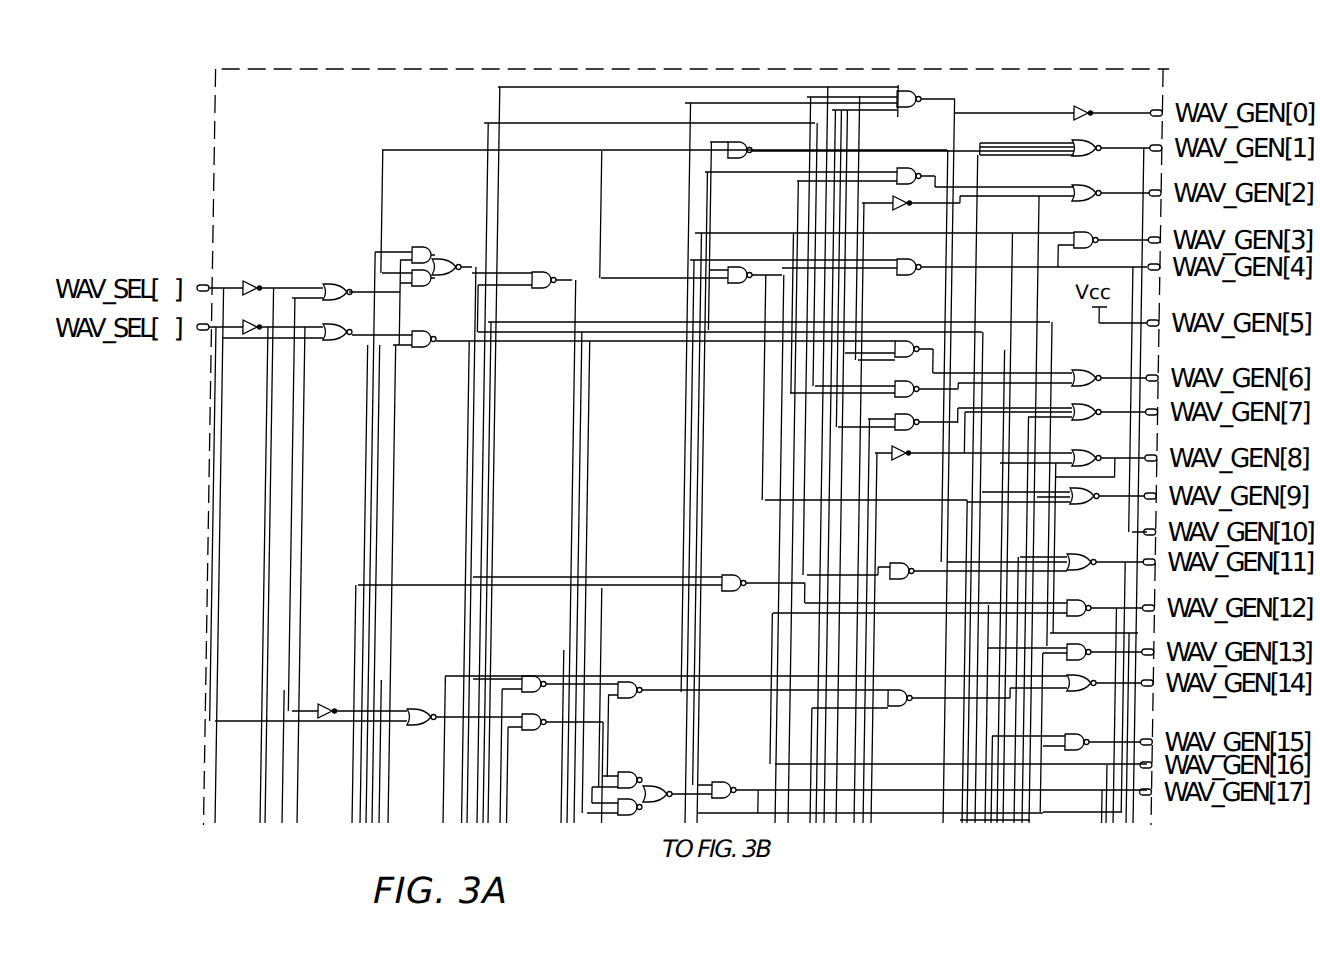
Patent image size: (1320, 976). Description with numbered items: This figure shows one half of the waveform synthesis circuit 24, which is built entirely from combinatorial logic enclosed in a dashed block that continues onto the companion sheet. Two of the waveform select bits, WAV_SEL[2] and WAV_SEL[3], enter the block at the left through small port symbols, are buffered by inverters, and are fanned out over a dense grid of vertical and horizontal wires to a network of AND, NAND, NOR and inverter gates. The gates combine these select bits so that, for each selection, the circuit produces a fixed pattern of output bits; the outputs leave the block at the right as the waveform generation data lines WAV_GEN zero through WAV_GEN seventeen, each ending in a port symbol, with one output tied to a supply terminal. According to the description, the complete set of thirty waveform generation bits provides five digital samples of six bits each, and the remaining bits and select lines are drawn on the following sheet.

The waveform synthesis circuit 24 is at (852, 68).
The waveform select signal WAV_SEL[2] input 2 is at (210, 289).
The waveform select signal WAV_SEL[3] input 3 is at (210, 328).